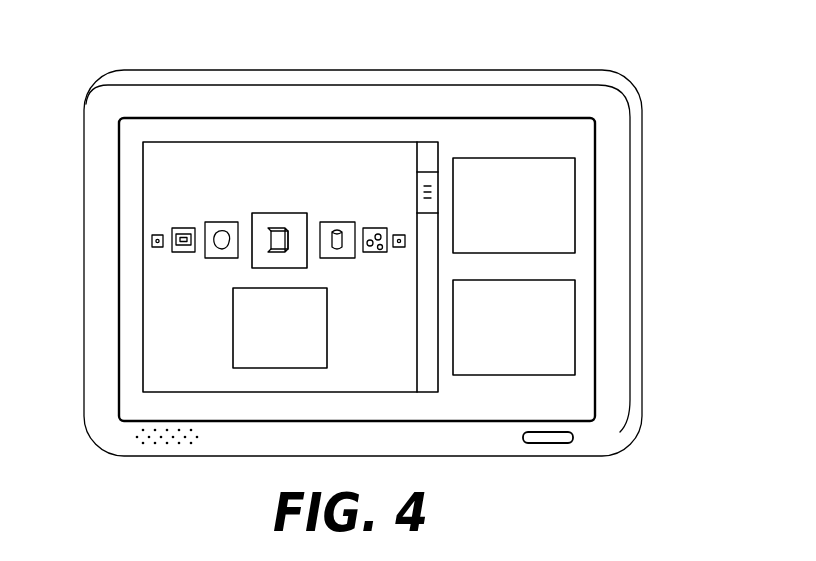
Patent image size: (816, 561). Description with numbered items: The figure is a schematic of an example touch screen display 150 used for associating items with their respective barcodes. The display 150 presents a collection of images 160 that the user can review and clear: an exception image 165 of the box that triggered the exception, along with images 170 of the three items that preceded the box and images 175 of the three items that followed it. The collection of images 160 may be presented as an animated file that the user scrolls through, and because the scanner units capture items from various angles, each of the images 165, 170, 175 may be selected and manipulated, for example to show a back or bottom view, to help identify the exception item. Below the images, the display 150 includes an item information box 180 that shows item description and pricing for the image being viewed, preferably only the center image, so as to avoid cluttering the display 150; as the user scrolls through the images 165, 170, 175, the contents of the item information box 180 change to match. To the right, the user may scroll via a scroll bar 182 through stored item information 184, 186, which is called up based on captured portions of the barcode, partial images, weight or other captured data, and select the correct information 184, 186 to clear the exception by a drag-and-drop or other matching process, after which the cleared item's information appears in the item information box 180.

The touch screen display 150 is at (509, 95).
The collection of images 160 is at (220, 209).
The exception image 165 is at (283, 215).
The images of previous items 170 is at (240, 206).
The images of subsequent items 175 is at (402, 206).
The item information box 180 is at (318, 347).
The scroll bar 182 is at (427, 373).
The item information 184 is at (577, 208).
The item information 186 is at (577, 329).